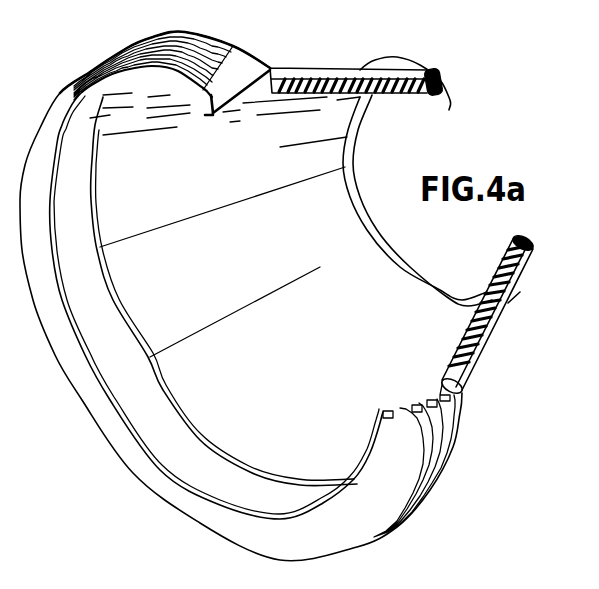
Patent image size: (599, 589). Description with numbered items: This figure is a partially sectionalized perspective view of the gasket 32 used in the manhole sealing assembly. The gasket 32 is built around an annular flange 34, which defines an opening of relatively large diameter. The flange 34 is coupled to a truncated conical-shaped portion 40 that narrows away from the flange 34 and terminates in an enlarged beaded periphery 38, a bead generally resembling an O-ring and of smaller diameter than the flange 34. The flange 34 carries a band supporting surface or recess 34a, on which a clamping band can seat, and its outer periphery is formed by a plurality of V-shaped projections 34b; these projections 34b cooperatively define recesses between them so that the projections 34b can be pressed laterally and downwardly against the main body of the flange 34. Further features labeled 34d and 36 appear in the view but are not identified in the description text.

The gasket 32 is at (56, 69).
The annular flange 34 is at (146, 98).
The band supporting surface or recess 34a is at (241, 101).
The V-shaped projections 34b is at (230, 74).
The tongue shoulder 34d is at (219, 114).
The inner surface of band 36 is at (447, 240).
The enlarged beaded periphery 38 is at (441, 95).
The truncated conical-shaped portion 40 is at (331, 94).